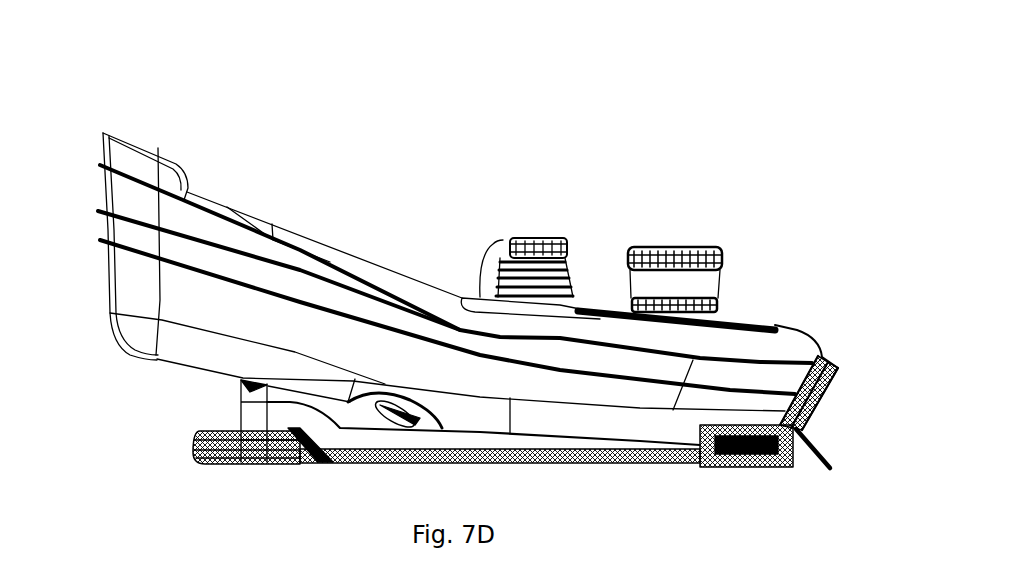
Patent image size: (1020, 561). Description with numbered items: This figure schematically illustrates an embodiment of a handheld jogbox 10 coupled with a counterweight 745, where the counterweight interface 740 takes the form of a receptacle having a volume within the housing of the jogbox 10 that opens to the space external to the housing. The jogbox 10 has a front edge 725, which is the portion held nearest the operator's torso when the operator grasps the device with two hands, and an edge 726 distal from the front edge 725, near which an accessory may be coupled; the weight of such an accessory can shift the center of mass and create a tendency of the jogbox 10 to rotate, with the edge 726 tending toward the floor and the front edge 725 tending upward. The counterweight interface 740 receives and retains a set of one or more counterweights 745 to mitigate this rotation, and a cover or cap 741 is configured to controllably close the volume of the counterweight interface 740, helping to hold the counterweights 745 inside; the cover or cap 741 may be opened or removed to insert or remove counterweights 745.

The jogbox 10 is at (333, 157).
The edge 726 is at (93, 288).
The front edge 725 is at (853, 402).
The counterweight interface 740 is at (730, 467).
The counterweight 745 is at (764, 458).
The cover or cap 741 is at (818, 452).